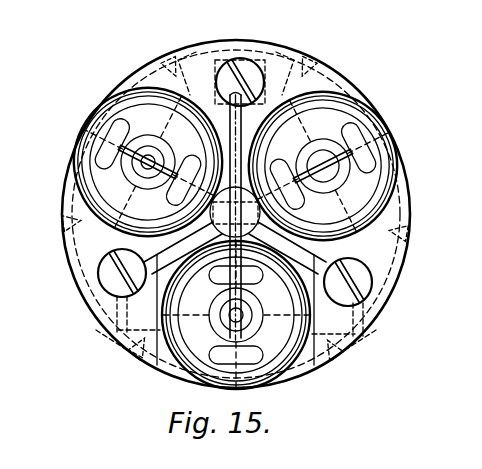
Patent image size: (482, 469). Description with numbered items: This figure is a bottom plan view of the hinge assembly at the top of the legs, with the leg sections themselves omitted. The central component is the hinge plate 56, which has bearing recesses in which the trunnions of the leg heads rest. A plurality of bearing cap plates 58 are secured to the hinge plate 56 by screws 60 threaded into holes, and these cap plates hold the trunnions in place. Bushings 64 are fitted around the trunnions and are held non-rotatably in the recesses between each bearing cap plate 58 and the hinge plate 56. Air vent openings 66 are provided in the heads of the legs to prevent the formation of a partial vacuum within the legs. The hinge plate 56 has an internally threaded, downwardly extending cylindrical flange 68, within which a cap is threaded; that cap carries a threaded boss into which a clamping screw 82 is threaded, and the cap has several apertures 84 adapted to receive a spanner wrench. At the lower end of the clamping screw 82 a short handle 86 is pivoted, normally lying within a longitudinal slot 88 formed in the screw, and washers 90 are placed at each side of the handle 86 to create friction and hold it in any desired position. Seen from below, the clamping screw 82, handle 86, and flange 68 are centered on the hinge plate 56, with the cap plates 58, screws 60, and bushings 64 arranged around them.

The hinge plate 56 is at (186, 372).
The bearing cap plate 58 is at (267, 58).
The screw 60 is at (241, 70).
The bushing 64 is at (178, 58).
The air vent opening 66 is at (262, 352).
The cylindrical flange 68 is at (130, 250).
The clamping screw 82 is at (385, 262).
The aperture 84 is at (160, 102).
The handle 86 is at (138, 132).
The longitudinal slot 88 is at (148, 197).
The washer 90 is at (330, 190).